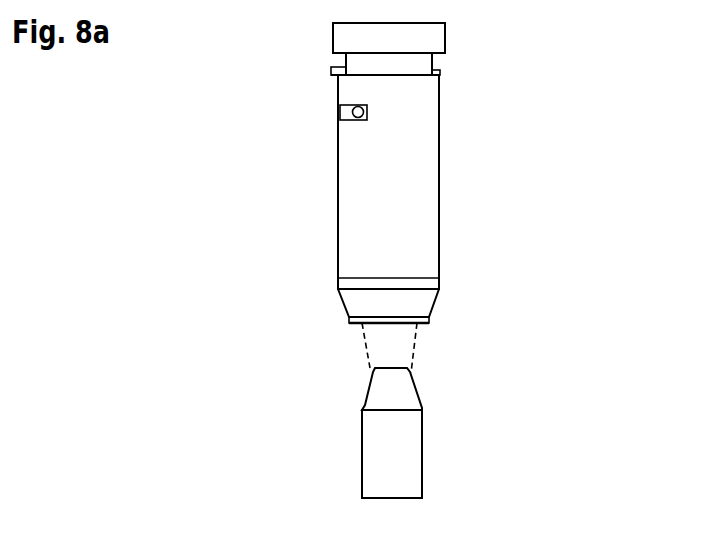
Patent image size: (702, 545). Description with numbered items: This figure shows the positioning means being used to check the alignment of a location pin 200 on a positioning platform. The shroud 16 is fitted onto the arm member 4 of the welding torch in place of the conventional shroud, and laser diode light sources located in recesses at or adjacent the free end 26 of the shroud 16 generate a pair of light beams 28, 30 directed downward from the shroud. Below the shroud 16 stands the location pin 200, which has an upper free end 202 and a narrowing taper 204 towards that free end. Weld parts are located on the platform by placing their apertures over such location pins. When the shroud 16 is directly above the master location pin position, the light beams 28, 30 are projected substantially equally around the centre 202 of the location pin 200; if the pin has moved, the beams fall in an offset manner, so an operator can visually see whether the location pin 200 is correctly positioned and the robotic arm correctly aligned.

The arm member 4 is at (437, 37).
The shroud 16 is at (428, 210).
The free end 26 is at (357, 325).
The light beam 28 is at (368, 357).
The light beam 30 is at (415, 357).
The location pin 200 is at (410, 468).
The upper free end 202 is at (392, 366).
The narrowing taper 204 is at (418, 390).